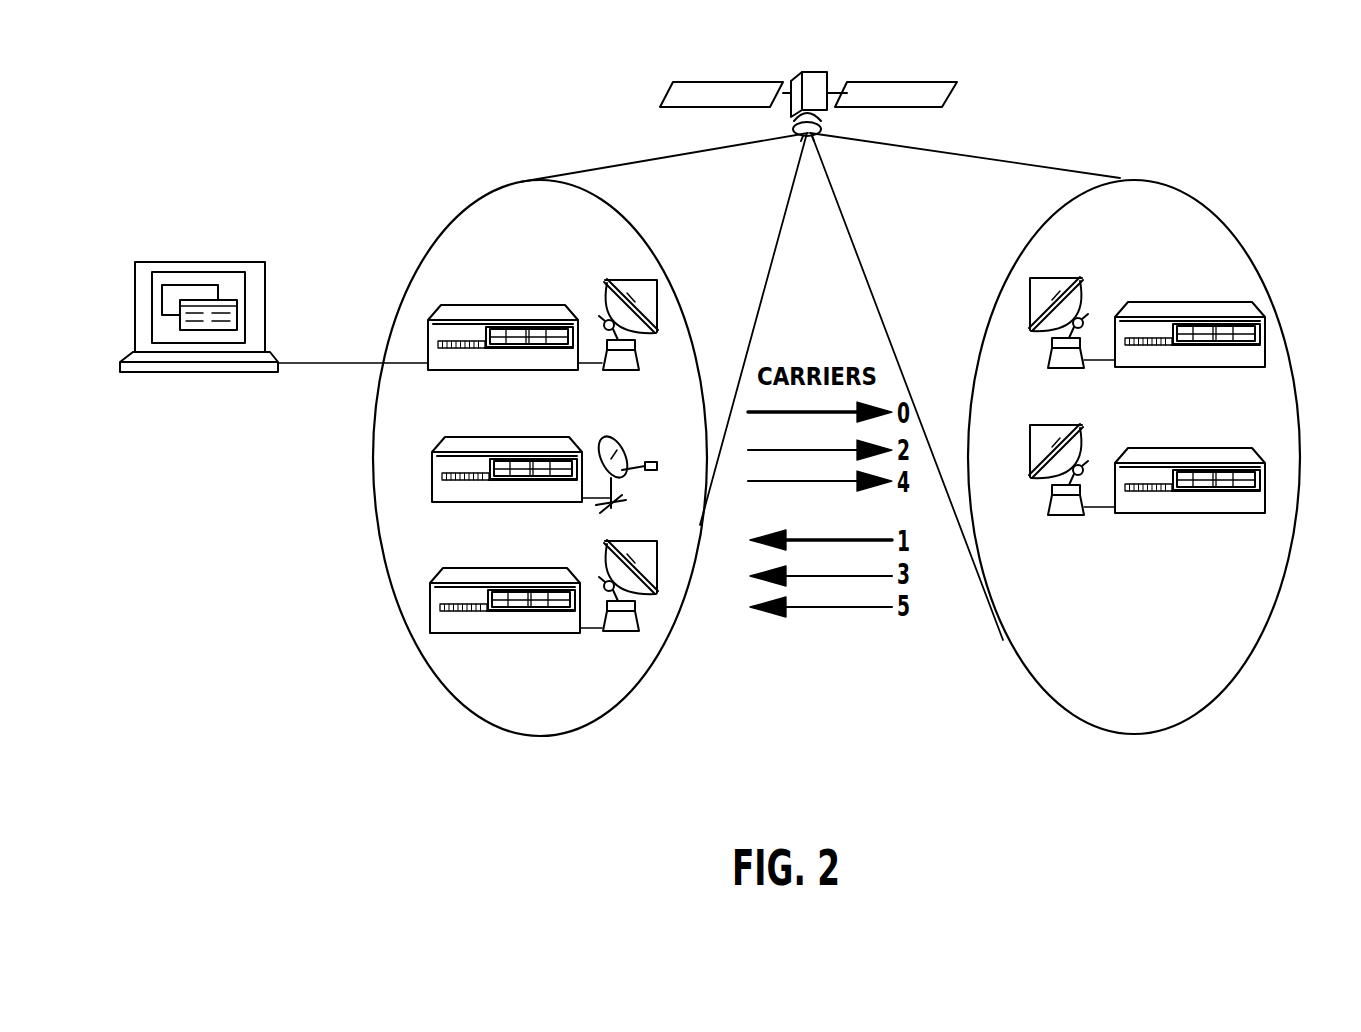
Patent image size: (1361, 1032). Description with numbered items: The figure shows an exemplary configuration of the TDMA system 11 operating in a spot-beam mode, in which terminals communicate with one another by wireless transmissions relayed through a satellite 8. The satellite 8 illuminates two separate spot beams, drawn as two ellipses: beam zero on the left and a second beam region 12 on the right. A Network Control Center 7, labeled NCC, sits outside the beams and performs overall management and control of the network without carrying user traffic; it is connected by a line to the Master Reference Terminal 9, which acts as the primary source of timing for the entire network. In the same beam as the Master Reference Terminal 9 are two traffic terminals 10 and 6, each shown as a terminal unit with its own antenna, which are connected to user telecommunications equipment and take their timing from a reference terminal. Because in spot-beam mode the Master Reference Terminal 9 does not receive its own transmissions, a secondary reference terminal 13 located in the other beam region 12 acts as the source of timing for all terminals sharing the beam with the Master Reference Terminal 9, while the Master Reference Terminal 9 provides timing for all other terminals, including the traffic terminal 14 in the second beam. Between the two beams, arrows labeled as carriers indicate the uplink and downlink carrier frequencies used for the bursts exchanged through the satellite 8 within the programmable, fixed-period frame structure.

The traffic terminal 6 is at (537, 635).
The Network Control Center 7 is at (161, 262).
The satellite 8 is at (812, 72).
The Master Reference Terminal 9 is at (467, 371).
The traffic terminal 10 is at (428, 468).
The TDMA system 11 is at (387, 568).
The beam 1 coverage area 12 is at (1292, 352).
The secondary reference terminal 13 is at (1142, 367).
The traffic terminal 14 is at (1170, 516).